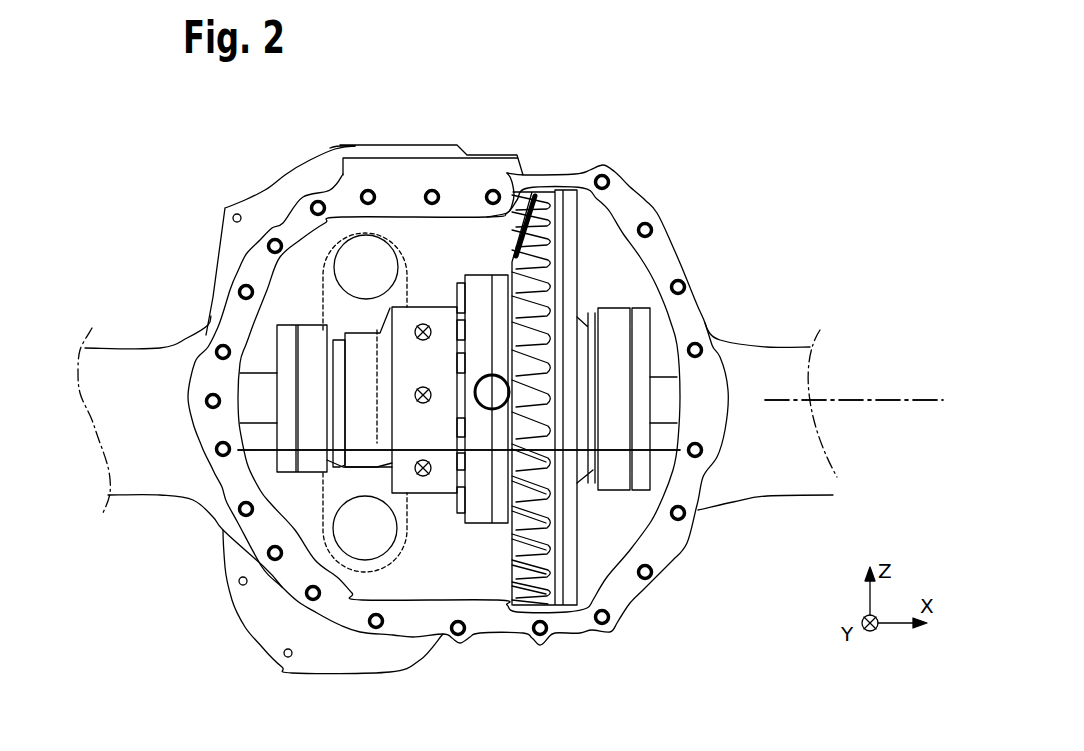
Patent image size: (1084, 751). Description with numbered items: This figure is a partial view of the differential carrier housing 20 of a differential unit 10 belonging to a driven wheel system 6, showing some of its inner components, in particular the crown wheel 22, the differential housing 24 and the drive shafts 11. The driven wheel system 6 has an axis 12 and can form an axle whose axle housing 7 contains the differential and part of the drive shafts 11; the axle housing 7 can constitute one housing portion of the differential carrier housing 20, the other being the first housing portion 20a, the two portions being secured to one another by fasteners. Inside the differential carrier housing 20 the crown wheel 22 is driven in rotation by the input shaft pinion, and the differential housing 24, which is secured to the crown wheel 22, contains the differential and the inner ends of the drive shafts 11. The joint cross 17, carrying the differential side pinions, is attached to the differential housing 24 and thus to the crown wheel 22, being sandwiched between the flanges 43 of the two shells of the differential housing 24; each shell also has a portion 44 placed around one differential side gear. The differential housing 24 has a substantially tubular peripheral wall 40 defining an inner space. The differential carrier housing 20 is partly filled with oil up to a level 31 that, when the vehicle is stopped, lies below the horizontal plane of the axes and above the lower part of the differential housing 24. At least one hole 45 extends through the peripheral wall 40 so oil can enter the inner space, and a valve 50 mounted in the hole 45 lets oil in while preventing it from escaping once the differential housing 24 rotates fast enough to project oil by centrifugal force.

The driven wheel system 6 is at (757, 577).
The axle housing 7 is at (132, 377).
The differential unit 10 is at (610, 653).
The drive shaft 11 is at (262, 372).
The axis 12 is at (920, 402).
The joint cross 17 is at (492, 375).
The differential carrier housing 20 is at (512, 409).
The first housing portion 20a is at (258, 273).
The crown wheel 22 is at (555, 207).
The differential housing 24 is at (483, 535).
The level 31 is at (615, 460).
The peripheral wall 40 is at (360, 388).
The flange 43 is at (502, 287).
The portion 44 is at (440, 320).
The hole 45 is at (388, 326).
The valve 50 is at (413, 395).